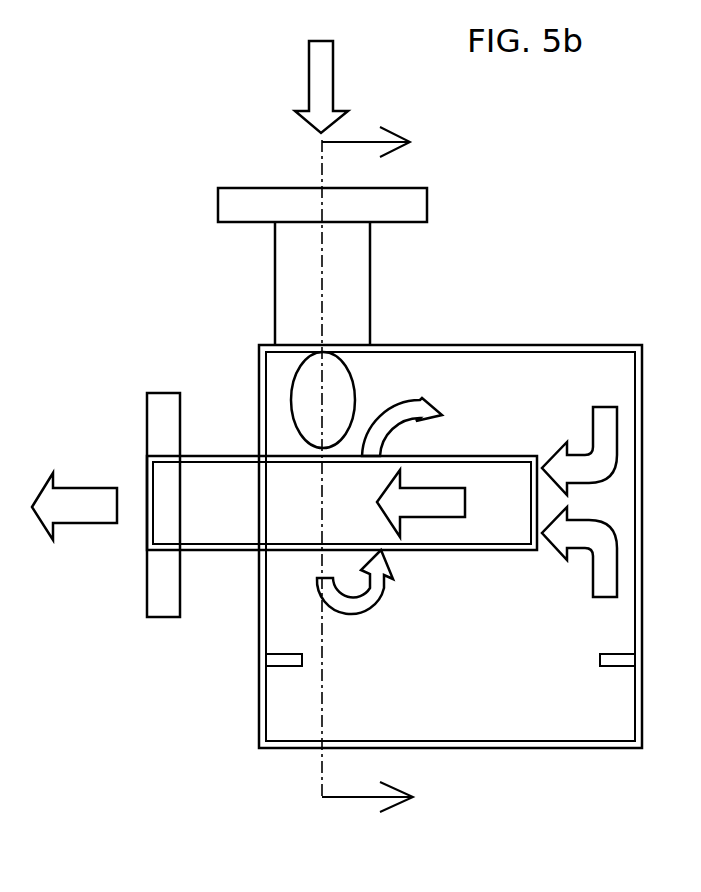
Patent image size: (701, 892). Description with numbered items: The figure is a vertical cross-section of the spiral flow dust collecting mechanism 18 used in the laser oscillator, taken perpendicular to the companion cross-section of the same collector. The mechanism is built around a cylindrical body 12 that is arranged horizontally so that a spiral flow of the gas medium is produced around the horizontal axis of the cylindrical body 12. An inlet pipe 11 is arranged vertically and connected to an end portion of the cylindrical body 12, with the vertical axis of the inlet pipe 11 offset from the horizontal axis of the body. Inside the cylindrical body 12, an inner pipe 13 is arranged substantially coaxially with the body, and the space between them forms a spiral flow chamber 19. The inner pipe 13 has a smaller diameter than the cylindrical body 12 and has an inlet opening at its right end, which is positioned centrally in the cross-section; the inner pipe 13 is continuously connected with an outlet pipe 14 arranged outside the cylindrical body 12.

The inlet pipe 11 is at (370, 272).
The cylindrical body 12 is at (460, 345).
The inner pipe 13 is at (512, 453).
The outlet pipe 14 is at (237, 457).
The spiral flow dust collecting mechanism 18 is at (547, 195).
The spiral flow chamber 19 is at (482, 388).